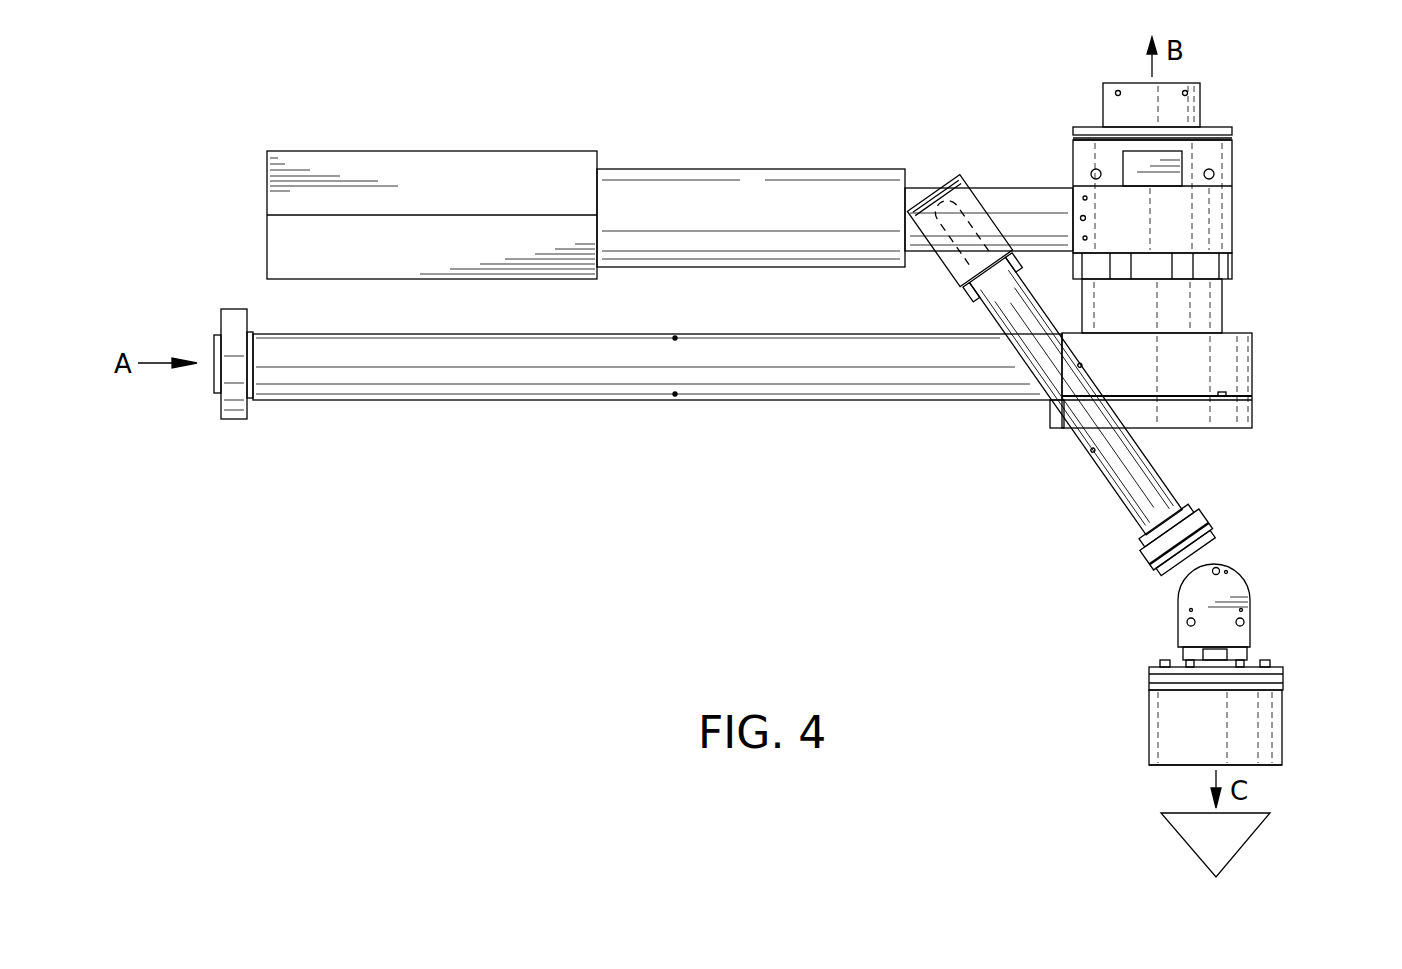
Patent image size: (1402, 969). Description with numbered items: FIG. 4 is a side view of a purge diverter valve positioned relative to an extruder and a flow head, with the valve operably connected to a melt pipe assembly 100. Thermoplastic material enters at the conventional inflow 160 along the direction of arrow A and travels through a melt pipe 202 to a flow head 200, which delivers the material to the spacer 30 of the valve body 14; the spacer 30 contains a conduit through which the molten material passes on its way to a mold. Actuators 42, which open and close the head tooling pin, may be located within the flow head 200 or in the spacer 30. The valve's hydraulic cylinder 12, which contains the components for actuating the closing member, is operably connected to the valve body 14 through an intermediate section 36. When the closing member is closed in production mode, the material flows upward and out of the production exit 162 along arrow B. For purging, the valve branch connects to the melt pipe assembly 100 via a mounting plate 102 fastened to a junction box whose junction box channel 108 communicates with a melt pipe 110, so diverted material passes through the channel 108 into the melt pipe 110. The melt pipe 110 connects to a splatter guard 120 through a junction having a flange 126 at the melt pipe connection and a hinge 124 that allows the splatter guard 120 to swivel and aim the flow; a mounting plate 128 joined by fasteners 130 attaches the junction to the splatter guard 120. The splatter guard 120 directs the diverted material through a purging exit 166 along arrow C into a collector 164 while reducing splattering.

The hydraulic cylinder 12 is at (518, 178).
The intermediate section 36 is at (745, 205).
The valve body 14 is at (1035, 200).
The mounting plate 102 is at (935, 180).
The junction box channel 108 is at (962, 220).
The melt pipe 110 is at (1143, 471).
The melt pipe assembly 100 is at (1070, 428).
The flange 126 is at (1210, 543).
The hinge 124 is at (1225, 583).
The fasteners 130 is at (1267, 660).
The mounting plate 128 is at (1273, 672).
The splatter guard 120 is at (1182, 722).
The purging exit 166 is at (1173, 765).
The collector 164 is at (1207, 838).
The production exit 162 is at (1186, 113).
The actuators 42 is at (1178, 159).
The spacer 30 is at (1197, 225).
The flow head 200 is at (1226, 368).
The inflow 160 is at (234, 320).
The melt pipe 202 is at (385, 372).